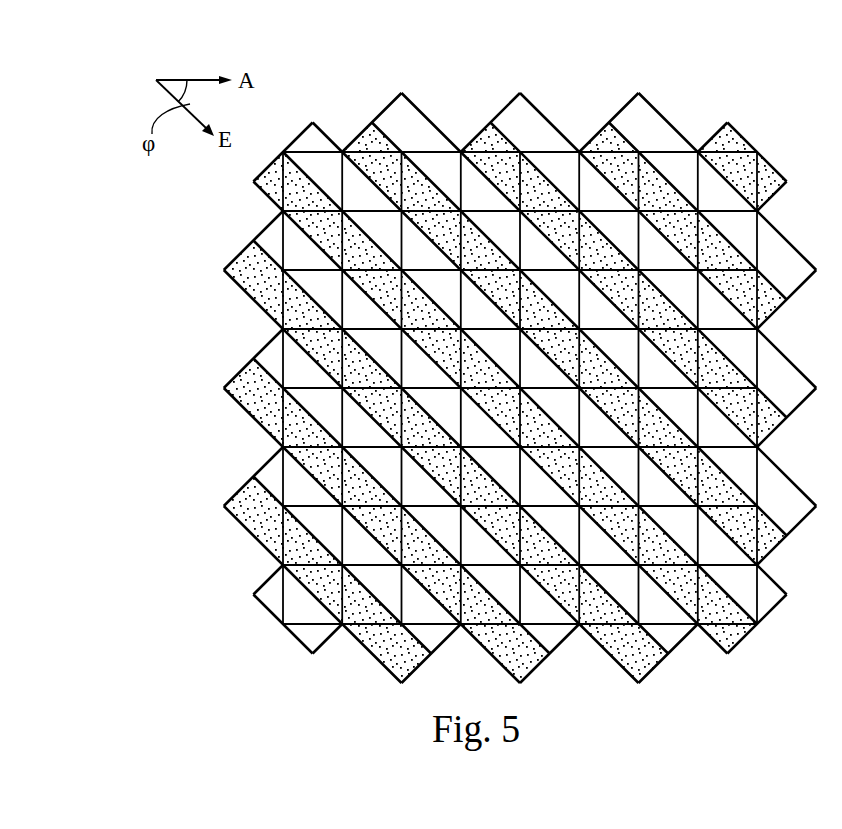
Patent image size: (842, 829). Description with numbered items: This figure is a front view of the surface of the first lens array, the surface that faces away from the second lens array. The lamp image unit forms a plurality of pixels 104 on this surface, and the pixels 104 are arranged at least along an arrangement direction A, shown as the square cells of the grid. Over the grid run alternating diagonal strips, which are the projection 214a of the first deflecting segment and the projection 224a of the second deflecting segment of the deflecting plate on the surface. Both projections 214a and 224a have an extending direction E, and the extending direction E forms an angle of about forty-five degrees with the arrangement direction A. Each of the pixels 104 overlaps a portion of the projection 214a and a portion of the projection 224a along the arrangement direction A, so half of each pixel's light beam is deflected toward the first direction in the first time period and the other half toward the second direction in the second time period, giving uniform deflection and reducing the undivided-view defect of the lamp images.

The pixel 104 is at (290, 371).
The projection of the first deflecting segment 214a is at (608, 142).
The projection of the second deflecting segment 224a is at (645, 128).